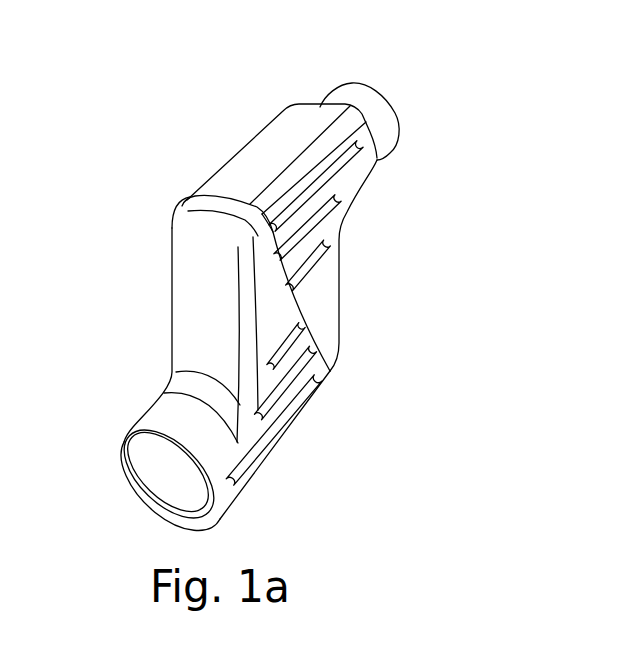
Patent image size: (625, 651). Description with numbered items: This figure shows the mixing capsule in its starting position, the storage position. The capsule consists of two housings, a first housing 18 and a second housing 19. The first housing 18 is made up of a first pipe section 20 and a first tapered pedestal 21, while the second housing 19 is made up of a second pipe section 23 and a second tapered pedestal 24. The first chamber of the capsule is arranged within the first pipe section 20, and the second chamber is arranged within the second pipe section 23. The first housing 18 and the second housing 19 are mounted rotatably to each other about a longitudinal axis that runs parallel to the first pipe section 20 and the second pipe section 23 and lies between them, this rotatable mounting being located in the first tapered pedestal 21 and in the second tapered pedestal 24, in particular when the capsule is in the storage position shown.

The first housing 18 is at (281, 440).
The second housing 19 is at (222, 171).
The first pipe section 20 is at (136, 474).
The first tapered pedestal 21 is at (183, 287).
The second pipe section 23 is at (307, 107).
The second tapered pedestal 24 is at (340, 302).